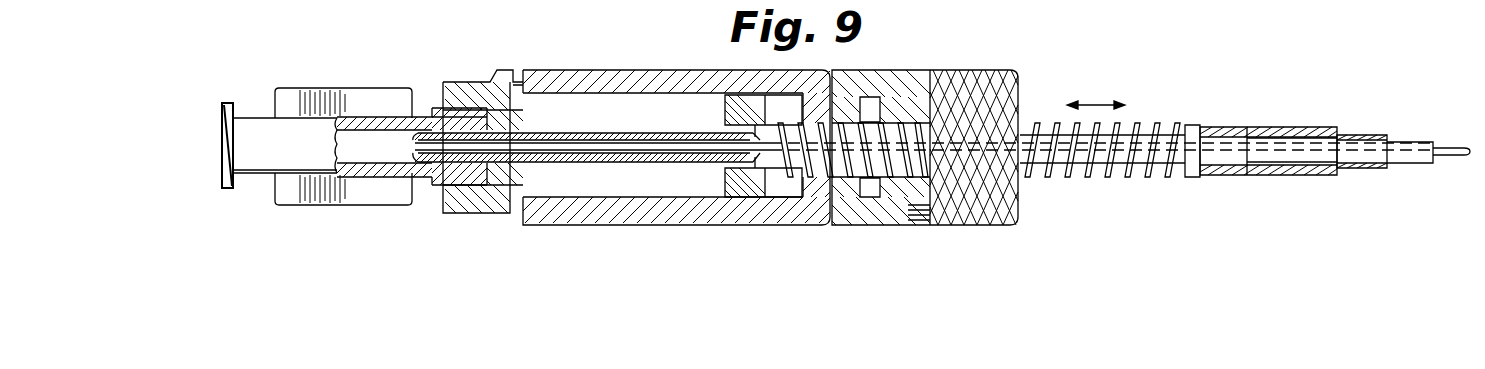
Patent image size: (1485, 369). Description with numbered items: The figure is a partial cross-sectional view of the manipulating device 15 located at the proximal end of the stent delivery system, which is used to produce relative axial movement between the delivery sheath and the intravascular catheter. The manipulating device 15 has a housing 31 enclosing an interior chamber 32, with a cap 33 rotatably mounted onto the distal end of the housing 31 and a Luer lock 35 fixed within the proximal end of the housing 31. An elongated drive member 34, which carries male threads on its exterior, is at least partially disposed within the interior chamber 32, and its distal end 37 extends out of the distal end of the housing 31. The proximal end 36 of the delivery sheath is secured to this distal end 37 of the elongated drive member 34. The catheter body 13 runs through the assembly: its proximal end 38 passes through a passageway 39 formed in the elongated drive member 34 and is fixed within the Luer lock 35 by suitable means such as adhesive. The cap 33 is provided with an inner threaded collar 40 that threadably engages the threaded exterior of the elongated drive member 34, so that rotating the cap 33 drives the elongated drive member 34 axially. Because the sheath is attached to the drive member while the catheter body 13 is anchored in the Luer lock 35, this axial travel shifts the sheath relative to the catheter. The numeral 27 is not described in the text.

The catheter body 13 is at (672, 152).
The manipulating device 15 is at (527, 66).
The tube 27 is at (415, 147).
The housing 31 is at (645, 70).
The interior chamber 32 is at (590, 188).
The cap 33 is at (982, 225).
The elongated drive member 34 is at (1147, 125).
The Luer lock 35 is at (380, 97).
The proximal end of the sheath 36 is at (1207, 175).
The distal end of the elongated drive member 37 is at (1235, 127).
The proximal end of the catheter body 38 is at (1063, 147).
The passageway 39 is at (1088, 165).
The inner threaded collar 40 is at (890, 178).